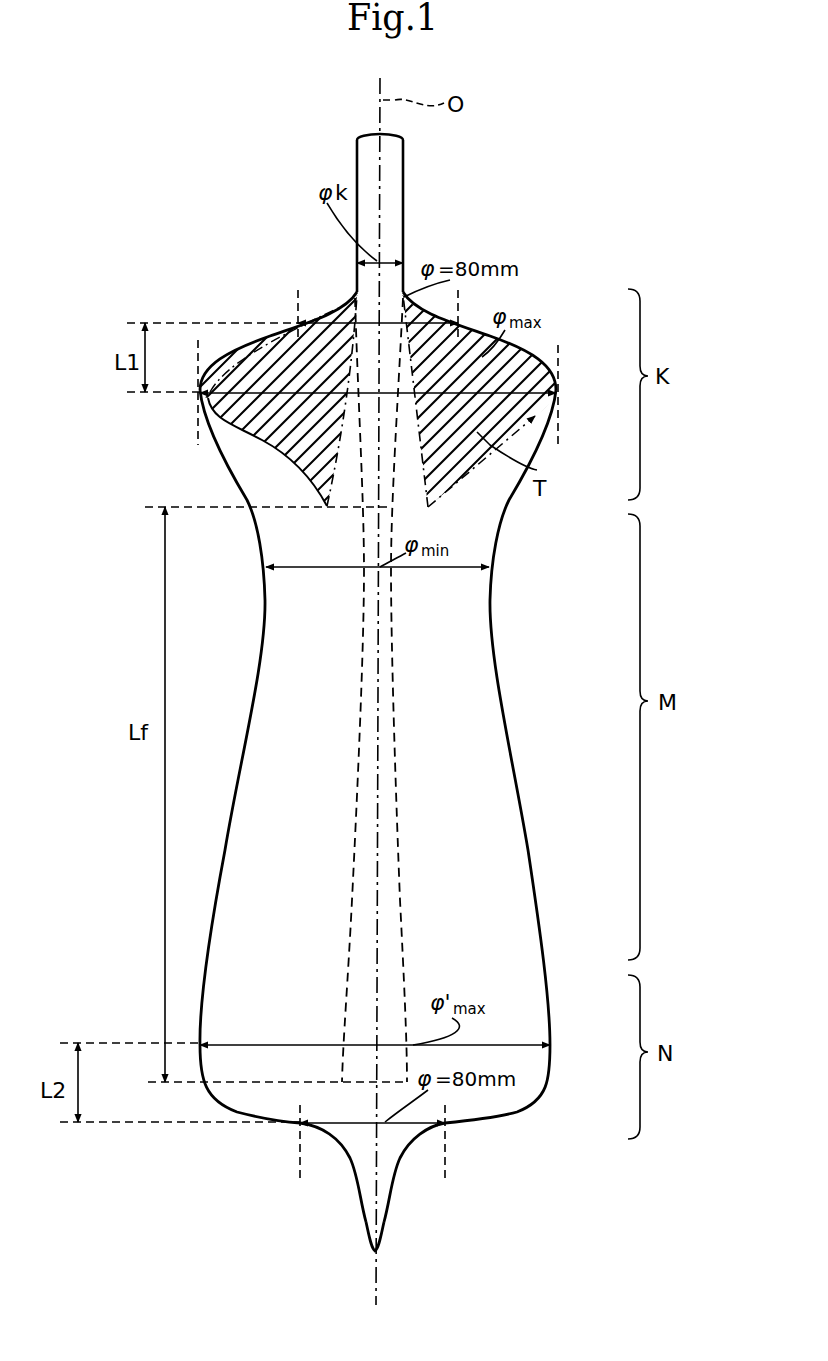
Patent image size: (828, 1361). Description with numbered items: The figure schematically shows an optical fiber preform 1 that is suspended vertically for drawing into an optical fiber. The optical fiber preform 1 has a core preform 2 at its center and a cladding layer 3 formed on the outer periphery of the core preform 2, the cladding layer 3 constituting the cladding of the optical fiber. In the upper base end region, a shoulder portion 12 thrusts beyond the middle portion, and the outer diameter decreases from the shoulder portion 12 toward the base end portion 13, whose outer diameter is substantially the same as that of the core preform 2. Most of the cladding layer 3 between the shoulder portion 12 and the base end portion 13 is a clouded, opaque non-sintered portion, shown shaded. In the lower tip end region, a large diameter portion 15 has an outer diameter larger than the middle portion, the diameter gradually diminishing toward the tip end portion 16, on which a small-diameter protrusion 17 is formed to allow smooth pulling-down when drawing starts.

The optical fiber preform 1 is at (657, 198).
The core preform 2 is at (394, 690).
The cladding layer 3 is at (482, 777).
The shoulder portion 12 is at (528, 360).
The base end portion 13 is at (367, 293).
The large diameter portion 15 is at (525, 1058).
The tip end portion 16 is at (353, 1135).
The small-diameter protrusion 17 is at (382, 1205).